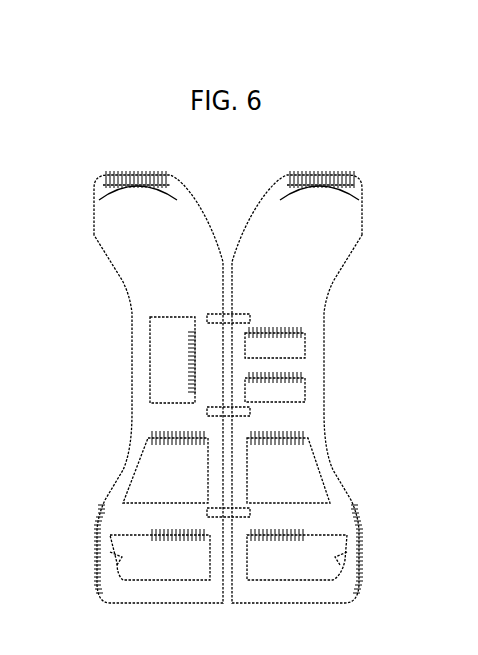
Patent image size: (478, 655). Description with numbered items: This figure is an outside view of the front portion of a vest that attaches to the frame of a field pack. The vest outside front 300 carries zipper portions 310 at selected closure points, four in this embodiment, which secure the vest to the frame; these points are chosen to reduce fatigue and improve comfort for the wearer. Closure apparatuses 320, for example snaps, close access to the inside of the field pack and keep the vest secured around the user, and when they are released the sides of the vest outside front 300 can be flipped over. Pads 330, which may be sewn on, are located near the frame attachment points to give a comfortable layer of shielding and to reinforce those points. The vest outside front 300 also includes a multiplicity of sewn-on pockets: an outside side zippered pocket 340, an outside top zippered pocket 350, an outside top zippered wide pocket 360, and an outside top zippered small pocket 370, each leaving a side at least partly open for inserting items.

The vest outside front 300 is at (325, 90).
The zipper portions 310 is at (125, 174).
The closure apparatuses 320 is at (207, 410).
The pads 330 is at (137, 188).
The outside side zippered pocket 340 is at (157, 376).
The outside top zippered pocket 350 is at (158, 477).
The outside top zippered wide pocket 360 is at (115, 555).
The outside top zippered small pocket 370 is at (305, 385).